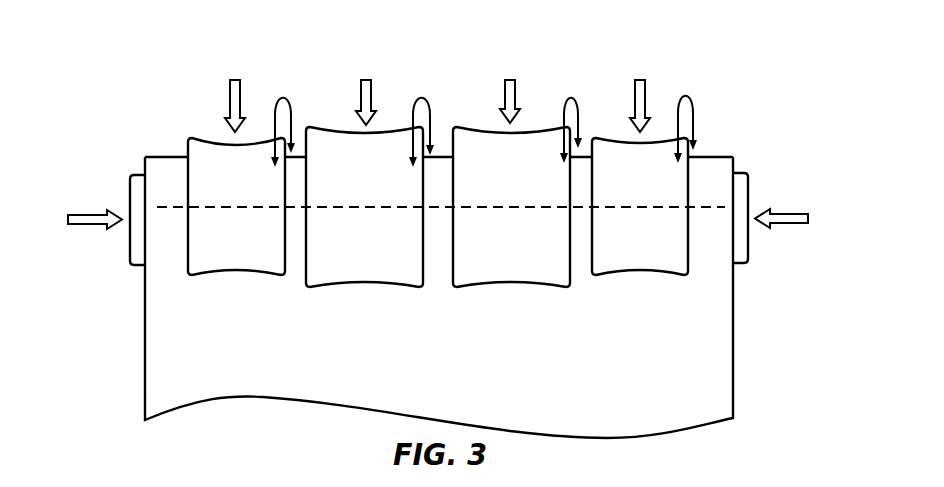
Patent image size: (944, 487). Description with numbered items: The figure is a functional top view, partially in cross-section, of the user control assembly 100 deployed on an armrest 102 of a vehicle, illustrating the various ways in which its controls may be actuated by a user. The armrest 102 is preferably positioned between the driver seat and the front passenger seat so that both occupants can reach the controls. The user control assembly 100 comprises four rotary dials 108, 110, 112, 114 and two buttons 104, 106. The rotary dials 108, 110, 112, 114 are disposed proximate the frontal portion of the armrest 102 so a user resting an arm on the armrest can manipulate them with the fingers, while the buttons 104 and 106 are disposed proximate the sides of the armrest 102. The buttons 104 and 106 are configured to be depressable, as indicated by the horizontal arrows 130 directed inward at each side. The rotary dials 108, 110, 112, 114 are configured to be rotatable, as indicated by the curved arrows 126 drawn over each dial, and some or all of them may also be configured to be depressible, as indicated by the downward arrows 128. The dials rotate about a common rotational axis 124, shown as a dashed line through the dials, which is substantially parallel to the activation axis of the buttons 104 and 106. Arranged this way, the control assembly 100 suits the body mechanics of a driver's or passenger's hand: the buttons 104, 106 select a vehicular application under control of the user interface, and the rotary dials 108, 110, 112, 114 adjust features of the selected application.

The user control assembly 100 is at (120, 65).
The armrest 102 is at (567, 401).
The button 104 is at (748, 237).
The button 106 is at (129, 190).
The rotary dial 108 is at (621, 256).
The rotary dial 110 is at (493, 256).
The rotary dial 112 is at (346, 256).
The rotary dial 114 is at (217, 256).
The common rotational axis 124 is at (175, 207).
The wrap-around direction arrows 126 is at (694, 102).
The arrows 128 is at (641, 79).
The arrows 130 is at (787, 212).